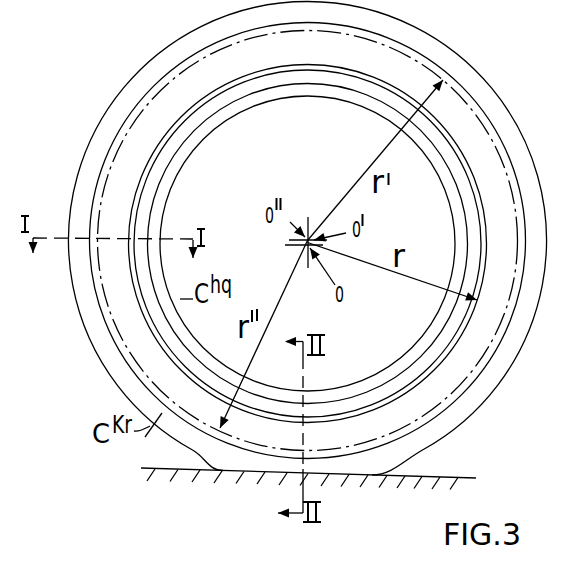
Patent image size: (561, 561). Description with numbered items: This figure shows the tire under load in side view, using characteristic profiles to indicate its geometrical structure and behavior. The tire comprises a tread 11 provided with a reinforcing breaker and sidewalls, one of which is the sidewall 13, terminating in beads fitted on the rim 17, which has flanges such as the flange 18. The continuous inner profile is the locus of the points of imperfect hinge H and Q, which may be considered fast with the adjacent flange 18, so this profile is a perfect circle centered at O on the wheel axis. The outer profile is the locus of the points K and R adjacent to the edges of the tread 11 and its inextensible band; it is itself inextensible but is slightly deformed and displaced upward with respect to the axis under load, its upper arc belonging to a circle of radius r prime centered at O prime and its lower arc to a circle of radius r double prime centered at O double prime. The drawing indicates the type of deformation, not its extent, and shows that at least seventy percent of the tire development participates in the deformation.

The tread 11 is at (96, 132).
The sidewall 13 is at (146, 356).
The rim 17 is at (217, 130).
The flange 18 is at (164, 208).